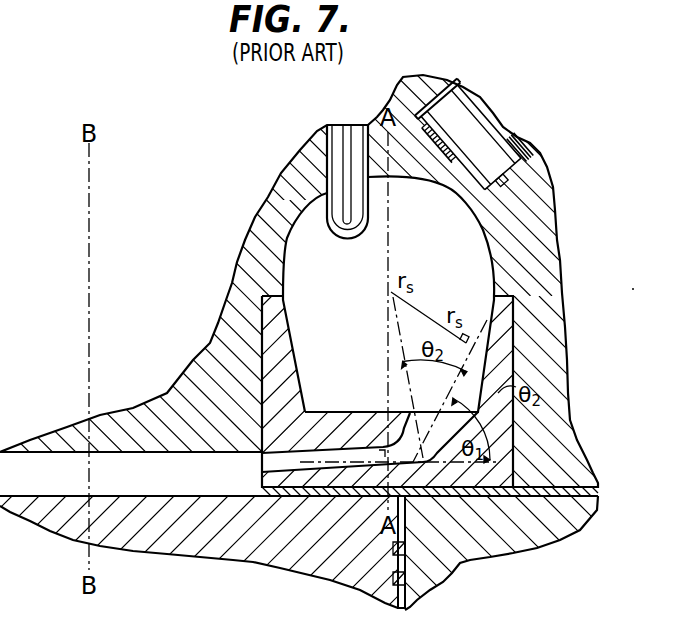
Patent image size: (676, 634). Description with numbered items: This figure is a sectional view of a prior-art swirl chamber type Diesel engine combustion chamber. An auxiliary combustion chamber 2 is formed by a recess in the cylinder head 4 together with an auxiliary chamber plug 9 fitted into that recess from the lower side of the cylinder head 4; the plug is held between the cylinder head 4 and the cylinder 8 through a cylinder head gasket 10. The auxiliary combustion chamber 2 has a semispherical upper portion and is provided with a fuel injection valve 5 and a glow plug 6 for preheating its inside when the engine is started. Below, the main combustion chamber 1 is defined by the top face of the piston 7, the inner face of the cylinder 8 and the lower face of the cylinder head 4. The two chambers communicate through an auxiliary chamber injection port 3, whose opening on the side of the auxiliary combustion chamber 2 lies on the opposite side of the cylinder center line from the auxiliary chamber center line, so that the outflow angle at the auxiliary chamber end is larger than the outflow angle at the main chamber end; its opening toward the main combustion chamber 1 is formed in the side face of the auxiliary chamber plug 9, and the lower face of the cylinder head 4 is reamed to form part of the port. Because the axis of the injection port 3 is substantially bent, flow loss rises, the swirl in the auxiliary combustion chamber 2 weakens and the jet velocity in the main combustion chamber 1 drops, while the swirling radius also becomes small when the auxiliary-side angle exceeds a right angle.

The main combustion chamber 1 is at (133, 488).
The auxiliary combustion chamber 2 is at (487, 273).
The auxiliary chamber injection port 3 is at (431, 383).
The cylinder head 4 is at (228, 352).
The fuel injection valve 5 is at (500, 137).
The glow plug 6 is at (343, 130).
The piston 7 is at (257, 538).
The cylinder 8 is at (418, 563).
The auxiliary chamber plug 9 is at (507, 357).
The cylinder head gasket 10 is at (562, 508).